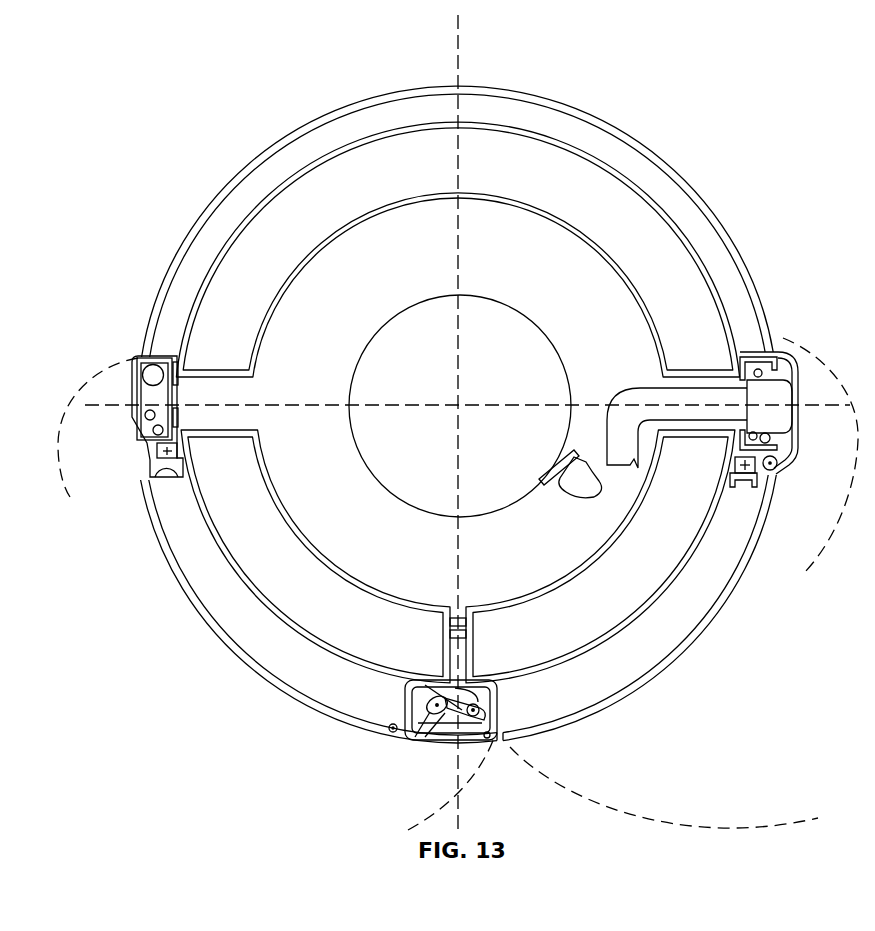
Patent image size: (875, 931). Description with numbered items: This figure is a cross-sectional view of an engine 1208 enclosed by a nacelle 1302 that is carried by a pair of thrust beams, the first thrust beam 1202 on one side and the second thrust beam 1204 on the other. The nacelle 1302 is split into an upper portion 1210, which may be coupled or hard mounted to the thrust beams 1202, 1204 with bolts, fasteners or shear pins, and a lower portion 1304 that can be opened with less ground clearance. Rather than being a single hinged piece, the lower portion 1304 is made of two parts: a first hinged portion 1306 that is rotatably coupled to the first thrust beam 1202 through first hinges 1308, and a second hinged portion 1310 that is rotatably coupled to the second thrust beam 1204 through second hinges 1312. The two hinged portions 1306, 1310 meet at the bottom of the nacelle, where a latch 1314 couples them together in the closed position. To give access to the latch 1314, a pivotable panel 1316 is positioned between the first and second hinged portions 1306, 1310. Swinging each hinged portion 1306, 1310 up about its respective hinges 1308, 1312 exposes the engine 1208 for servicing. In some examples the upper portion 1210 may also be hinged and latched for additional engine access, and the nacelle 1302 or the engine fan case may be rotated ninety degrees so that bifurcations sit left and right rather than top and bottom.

The first thrust beam 1202 is at (713, 410).
The second thrust beam 1204 is at (128, 413).
The engine 1208 is at (441, 378).
The upper portion 1210 is at (408, 93).
The nacelle 1302 is at (458, 197).
The lower portion 1304 is at (459, 621).
The first hinged portion 1306 is at (648, 673).
The first hinges 1308 is at (748, 470).
The second hinged portion 1310 is at (215, 620).
The second hinges 1312 is at (167, 452).
The latch 1314 is at (467, 725).
The pivotable panel 1316 is at (465, 746).